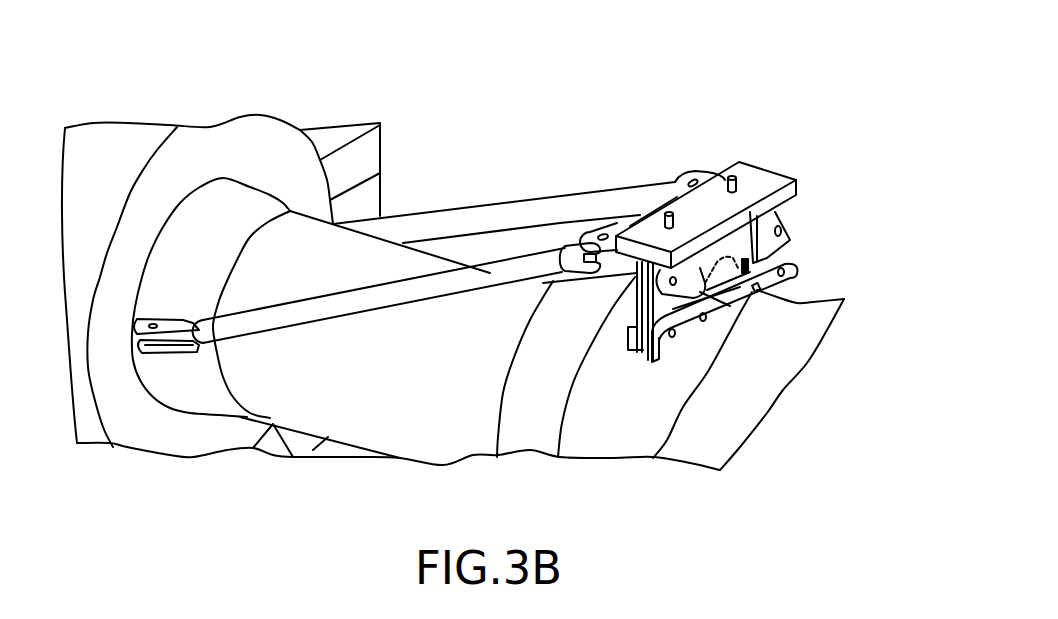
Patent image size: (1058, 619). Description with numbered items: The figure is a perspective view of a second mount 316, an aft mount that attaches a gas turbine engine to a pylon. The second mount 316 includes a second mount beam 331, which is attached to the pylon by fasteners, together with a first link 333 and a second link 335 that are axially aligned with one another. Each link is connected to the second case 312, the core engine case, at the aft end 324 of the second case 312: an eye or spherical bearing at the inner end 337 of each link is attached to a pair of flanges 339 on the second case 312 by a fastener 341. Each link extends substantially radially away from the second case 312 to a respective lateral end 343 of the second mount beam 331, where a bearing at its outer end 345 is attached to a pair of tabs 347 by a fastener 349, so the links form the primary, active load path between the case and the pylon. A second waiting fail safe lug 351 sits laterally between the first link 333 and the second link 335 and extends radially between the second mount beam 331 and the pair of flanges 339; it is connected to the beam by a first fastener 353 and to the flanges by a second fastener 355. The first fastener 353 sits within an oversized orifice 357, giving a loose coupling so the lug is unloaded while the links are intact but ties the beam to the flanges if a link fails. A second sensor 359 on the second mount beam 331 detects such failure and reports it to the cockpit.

The second case 312 is at (302, 405).
The second mount 316 is at (795, 122).
The aft end 324 is at (607, 442).
The second mount beam 331 is at (678, 202).
The first link 333 is at (643, 315).
The second link 335 is at (800, 243).
The inner end 337 is at (643, 347).
The pair of flanges 339 is at (685, 329).
The fastener 341 is at (673, 338).
The lateral end 343 is at (637, 273).
The outer end 345 is at (637, 280).
The pair of tabs 347 is at (693, 268).
The fastener 349 is at (676, 284).
The second waiting fail safe lug 351 is at (720, 293).
The first fastener 353 is at (742, 259).
The second fastener 355 is at (758, 291).
The oversized orifice 357 is at (735, 270).
The second sensor 359 is at (800, 272).